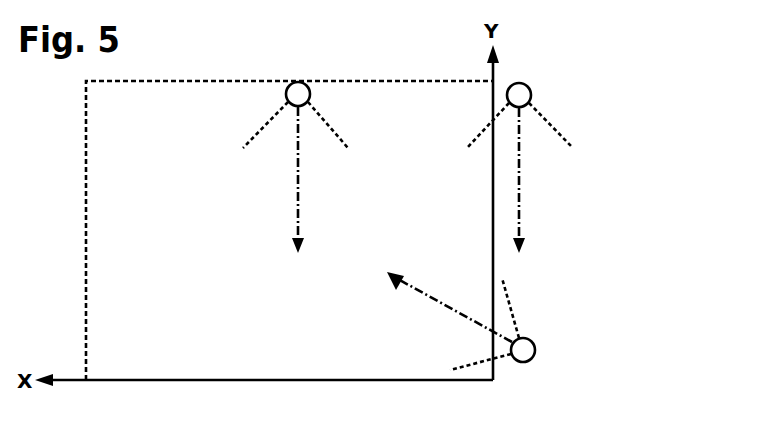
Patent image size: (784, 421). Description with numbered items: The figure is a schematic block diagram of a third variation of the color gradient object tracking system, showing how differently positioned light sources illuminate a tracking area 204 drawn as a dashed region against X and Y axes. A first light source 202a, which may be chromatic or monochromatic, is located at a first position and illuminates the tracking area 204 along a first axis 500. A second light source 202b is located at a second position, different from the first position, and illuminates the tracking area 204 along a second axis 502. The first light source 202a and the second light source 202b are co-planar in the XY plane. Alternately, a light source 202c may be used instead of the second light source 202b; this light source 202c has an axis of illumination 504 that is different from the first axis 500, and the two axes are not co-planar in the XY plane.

The tracking area 204 is at (133, 365).
The first light source 202a is at (524, 359).
The second light source 202b is at (519, 90).
The light source 202c is at (296, 90).
The first axis 500 is at (445, 305).
The second axis 502 is at (522, 188).
The axis of illumination 504 is at (293, 191).